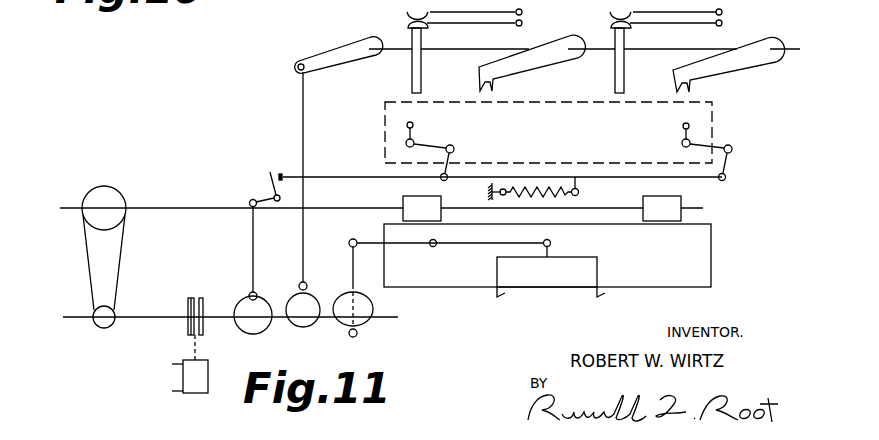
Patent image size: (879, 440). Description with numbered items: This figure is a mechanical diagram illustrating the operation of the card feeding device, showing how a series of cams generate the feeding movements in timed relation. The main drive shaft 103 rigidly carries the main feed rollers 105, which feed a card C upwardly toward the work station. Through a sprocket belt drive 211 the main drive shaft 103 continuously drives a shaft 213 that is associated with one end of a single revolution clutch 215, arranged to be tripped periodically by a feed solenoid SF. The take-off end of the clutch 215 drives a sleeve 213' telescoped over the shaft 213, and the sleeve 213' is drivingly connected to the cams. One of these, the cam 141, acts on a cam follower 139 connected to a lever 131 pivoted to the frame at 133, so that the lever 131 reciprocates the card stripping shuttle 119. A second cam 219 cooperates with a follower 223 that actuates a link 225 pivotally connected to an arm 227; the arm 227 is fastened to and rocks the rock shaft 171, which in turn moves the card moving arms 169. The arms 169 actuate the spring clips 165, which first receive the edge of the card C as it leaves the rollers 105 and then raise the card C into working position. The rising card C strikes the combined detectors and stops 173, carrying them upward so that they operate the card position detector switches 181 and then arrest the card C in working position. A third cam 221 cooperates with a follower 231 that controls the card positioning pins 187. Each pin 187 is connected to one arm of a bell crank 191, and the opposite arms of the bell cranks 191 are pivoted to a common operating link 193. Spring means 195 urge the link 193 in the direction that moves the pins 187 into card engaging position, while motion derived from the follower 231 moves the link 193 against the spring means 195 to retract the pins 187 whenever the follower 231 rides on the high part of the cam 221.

The main drive shaft 103 is at (160, 207).
The main feed rollers 105 is at (403, 200).
The card stripping shuttle 119 is at (598, 270).
The lever 131 is at (440, 246).
The pivot 133 is at (433, 247).
The cam follower 139 is at (358, 333).
The cam 141 is at (374, 307).
The spring clips 165 is at (492, 81).
The card moving arms 169 is at (539, 43).
The rock shaft 171 is at (456, 49).
The combined detectors and stops 173 is at (412, 77).
The card position detector switches 181 is at (424, 13).
The card positioning pins 187 is at (407, 132).
The bell crank 191 is at (430, 144).
The common operating link 193 is at (351, 176).
The spring means 195 is at (580, 194).
The sprocket belt drive 211 is at (85, 261).
The shaft 213 is at (230, 335).
The sleeve 213' is at (244, 328).
The single revolution clutch 215 is at (186, 300).
The cam 219 is at (294, 326).
The cam 221 is at (248, 297).
The follower 223 is at (308, 282).
The link 225 is at (301, 88).
The arm 227 is at (343, 48).
The follower 231 is at (256, 294).
The card C is at (713, 255).
The feed solenoid SF is at (186, 393).